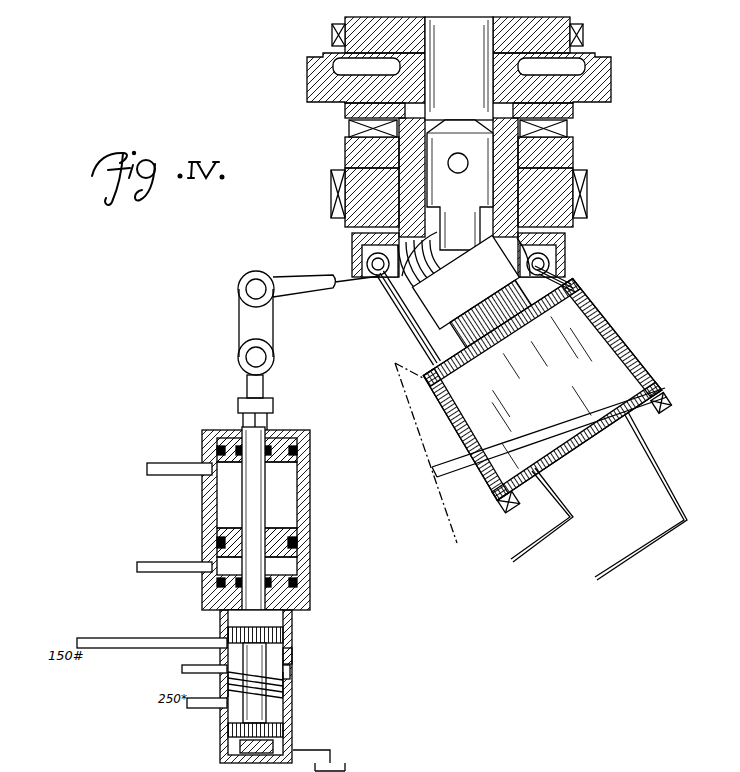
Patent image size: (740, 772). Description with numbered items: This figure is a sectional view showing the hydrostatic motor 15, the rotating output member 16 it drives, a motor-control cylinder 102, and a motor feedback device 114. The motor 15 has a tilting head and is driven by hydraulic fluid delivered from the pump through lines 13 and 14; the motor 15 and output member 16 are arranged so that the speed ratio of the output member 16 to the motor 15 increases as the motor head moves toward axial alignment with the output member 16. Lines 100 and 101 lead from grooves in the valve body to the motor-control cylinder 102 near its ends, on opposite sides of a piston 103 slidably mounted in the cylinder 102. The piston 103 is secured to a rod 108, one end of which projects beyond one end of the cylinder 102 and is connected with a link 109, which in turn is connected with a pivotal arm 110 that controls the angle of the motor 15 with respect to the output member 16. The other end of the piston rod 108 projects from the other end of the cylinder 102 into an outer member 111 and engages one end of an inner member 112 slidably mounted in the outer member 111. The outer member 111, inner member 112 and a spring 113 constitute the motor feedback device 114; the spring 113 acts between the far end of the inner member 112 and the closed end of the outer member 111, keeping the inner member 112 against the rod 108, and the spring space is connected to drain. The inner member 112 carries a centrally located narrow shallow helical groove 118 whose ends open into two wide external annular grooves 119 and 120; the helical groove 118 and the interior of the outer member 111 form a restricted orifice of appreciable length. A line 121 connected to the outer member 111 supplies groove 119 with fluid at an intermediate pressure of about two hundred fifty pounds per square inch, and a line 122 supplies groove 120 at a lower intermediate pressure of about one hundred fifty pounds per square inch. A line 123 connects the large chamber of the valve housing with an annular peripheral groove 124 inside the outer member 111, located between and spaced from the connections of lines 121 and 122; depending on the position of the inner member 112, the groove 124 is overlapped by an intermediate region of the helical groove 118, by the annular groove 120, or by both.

The line 13 is at (645, 560).
The line 14 is at (515, 562).
The hydrostatic motor 15 is at (603, 312).
The output member 16 is at (551, 185).
The line 100 is at (158, 463).
The line 101 is at (157, 562).
The motor-control cylinder 102 is at (312, 473).
The piston 103 is at (308, 536).
The rod 108 is at (263, 425).
The link 109 is at (239, 323).
The pivotal arm 110 is at (303, 281).
The outer member 111 is at (287, 693).
The inner member 112 is at (230, 640).
The spring 113 is at (242, 744).
The motor feedback device 114 is at (315, 661).
The helical groove 118 is at (277, 688).
The annular groove 119 is at (273, 713).
The annular groove 120 is at (270, 652).
The line 121 is at (213, 705).
The line 122 is at (92, 637).
The line 123 is at (188, 677).
The annular peripheral groove 124 is at (290, 672).